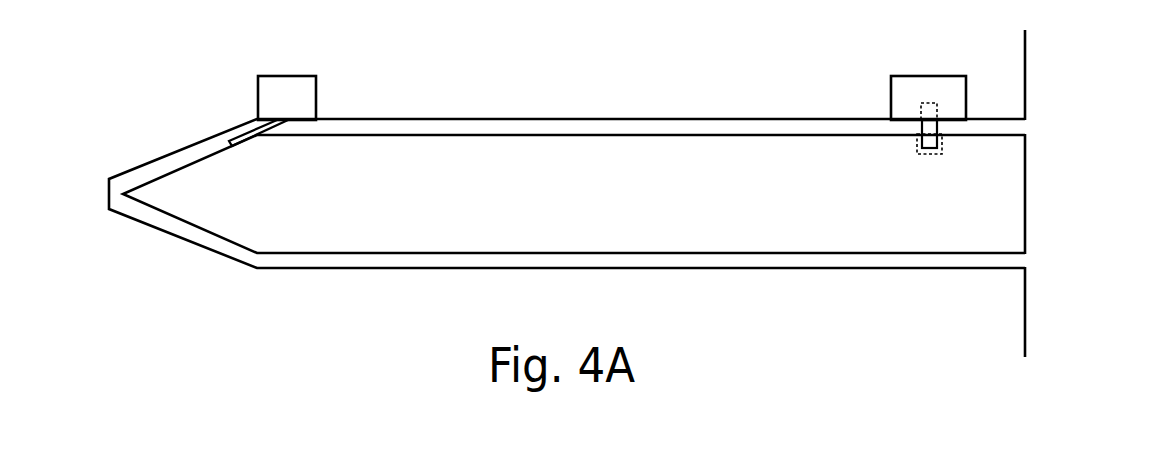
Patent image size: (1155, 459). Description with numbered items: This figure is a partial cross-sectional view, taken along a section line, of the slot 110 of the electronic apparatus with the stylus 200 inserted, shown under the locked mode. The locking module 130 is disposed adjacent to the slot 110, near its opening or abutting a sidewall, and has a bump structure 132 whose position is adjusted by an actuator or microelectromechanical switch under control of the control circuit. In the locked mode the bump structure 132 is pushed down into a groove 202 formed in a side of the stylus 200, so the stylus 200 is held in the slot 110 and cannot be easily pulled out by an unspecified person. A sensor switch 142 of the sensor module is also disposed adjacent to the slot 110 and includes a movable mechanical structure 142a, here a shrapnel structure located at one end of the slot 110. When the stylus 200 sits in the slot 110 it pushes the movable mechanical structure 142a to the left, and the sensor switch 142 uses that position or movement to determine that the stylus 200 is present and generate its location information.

The slot 110 is at (1025, 259).
The locking module 130 is at (935, 76).
The bump structure 132 is at (918, 128).
The sensor switch 142 is at (316, 92).
The movable mechanical structure 142a is at (243, 131).
The stylus 200 is at (1027, 192).
The groove 202 is at (943, 155).